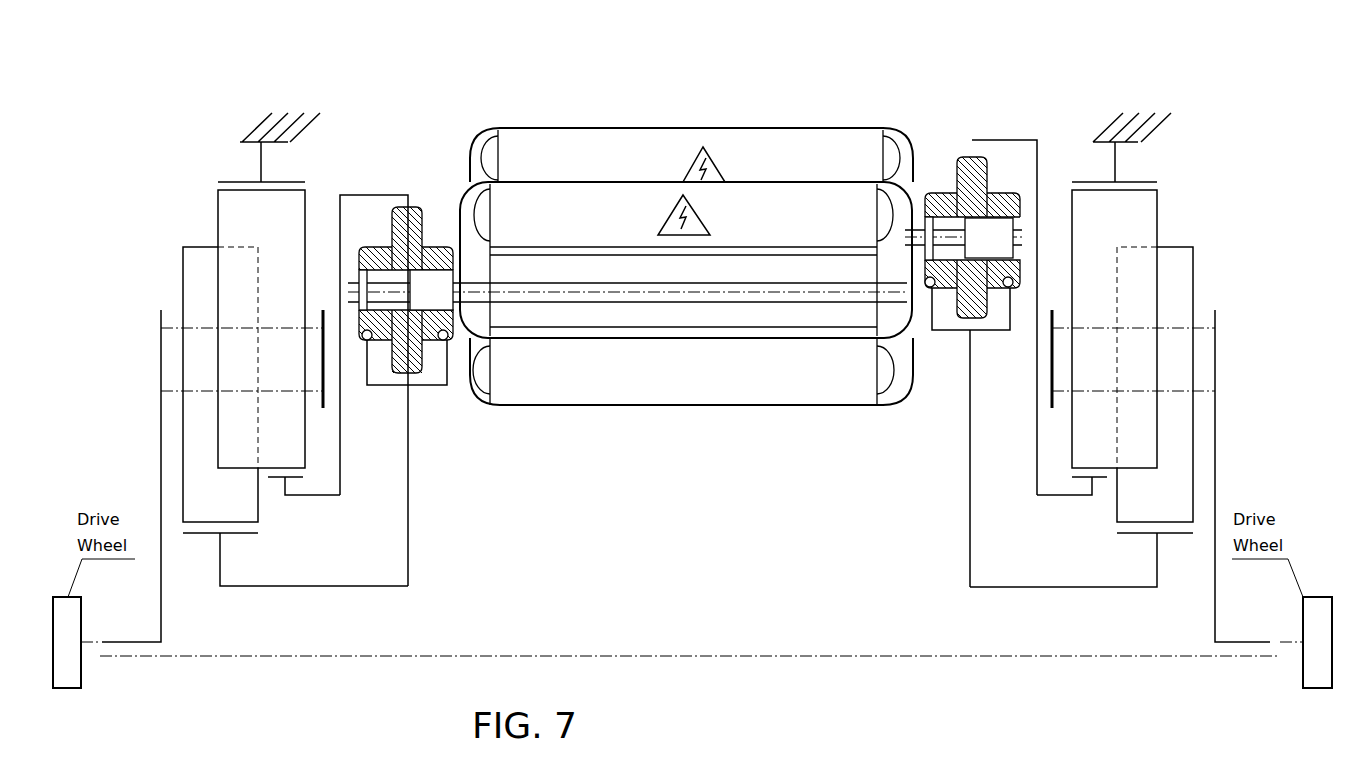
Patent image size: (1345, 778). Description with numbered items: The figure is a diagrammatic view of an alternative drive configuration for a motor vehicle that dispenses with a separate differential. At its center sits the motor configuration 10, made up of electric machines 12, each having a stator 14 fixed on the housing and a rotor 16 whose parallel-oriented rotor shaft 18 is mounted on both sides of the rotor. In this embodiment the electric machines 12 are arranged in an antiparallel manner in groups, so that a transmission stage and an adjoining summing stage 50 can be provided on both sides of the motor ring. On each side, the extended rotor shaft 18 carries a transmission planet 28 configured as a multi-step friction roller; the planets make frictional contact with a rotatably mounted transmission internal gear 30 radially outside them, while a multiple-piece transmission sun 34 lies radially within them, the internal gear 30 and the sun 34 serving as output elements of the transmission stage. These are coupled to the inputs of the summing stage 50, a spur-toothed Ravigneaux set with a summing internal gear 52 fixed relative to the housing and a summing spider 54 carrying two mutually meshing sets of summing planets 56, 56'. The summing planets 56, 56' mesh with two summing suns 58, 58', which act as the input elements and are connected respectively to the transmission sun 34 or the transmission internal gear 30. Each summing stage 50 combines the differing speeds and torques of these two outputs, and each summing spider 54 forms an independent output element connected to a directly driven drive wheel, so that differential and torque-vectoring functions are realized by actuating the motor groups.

The motor configuration 10 is at (677, 483).
The electric machine 12 is at (613, 130).
The stator 14 is at (663, 142).
The rotor 16 is at (668, 317).
The rotor shaft 18 is at (473, 295).
The transmission planet 28 is at (423, 255).
The transmission internal gear 30 is at (412, 204).
The transmission sun 34 is at (407, 385).
The summing stage 50 is at (262, 598).
The summing internal gear 52 is at (230, 182).
The summing spider 54 is at (160, 363).
The summing planet 56 is at (692, 371).
The summing planet 56' is at (690, 313).
The summing sun 58 is at (691, 583).
The summing sun 58' is at (687, 514).